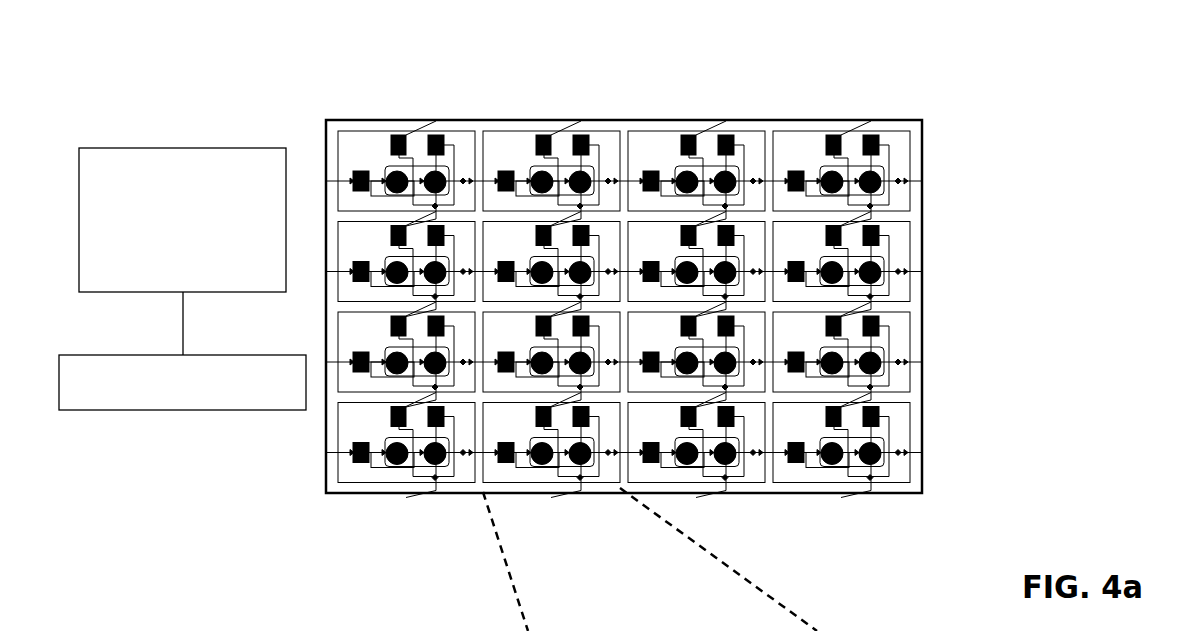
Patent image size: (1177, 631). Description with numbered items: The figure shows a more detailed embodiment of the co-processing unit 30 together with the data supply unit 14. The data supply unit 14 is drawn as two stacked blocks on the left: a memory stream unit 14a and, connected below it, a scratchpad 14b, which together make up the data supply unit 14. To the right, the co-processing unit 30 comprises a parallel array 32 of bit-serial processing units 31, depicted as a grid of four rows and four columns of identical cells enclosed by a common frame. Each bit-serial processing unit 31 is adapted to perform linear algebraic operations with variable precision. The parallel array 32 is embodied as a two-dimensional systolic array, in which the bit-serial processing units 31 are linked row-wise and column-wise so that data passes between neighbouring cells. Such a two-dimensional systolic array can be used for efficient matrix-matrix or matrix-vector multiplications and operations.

The data supply unit 14 is at (77, 95).
The memory stream unit 14a is at (209, 160).
The scratchpad 14b is at (131, 408).
The co-processing unit 30 is at (979, 599).
The bit-serial processing unit 31 is at (898, 243).
The parallel array 32 is at (945, 193).